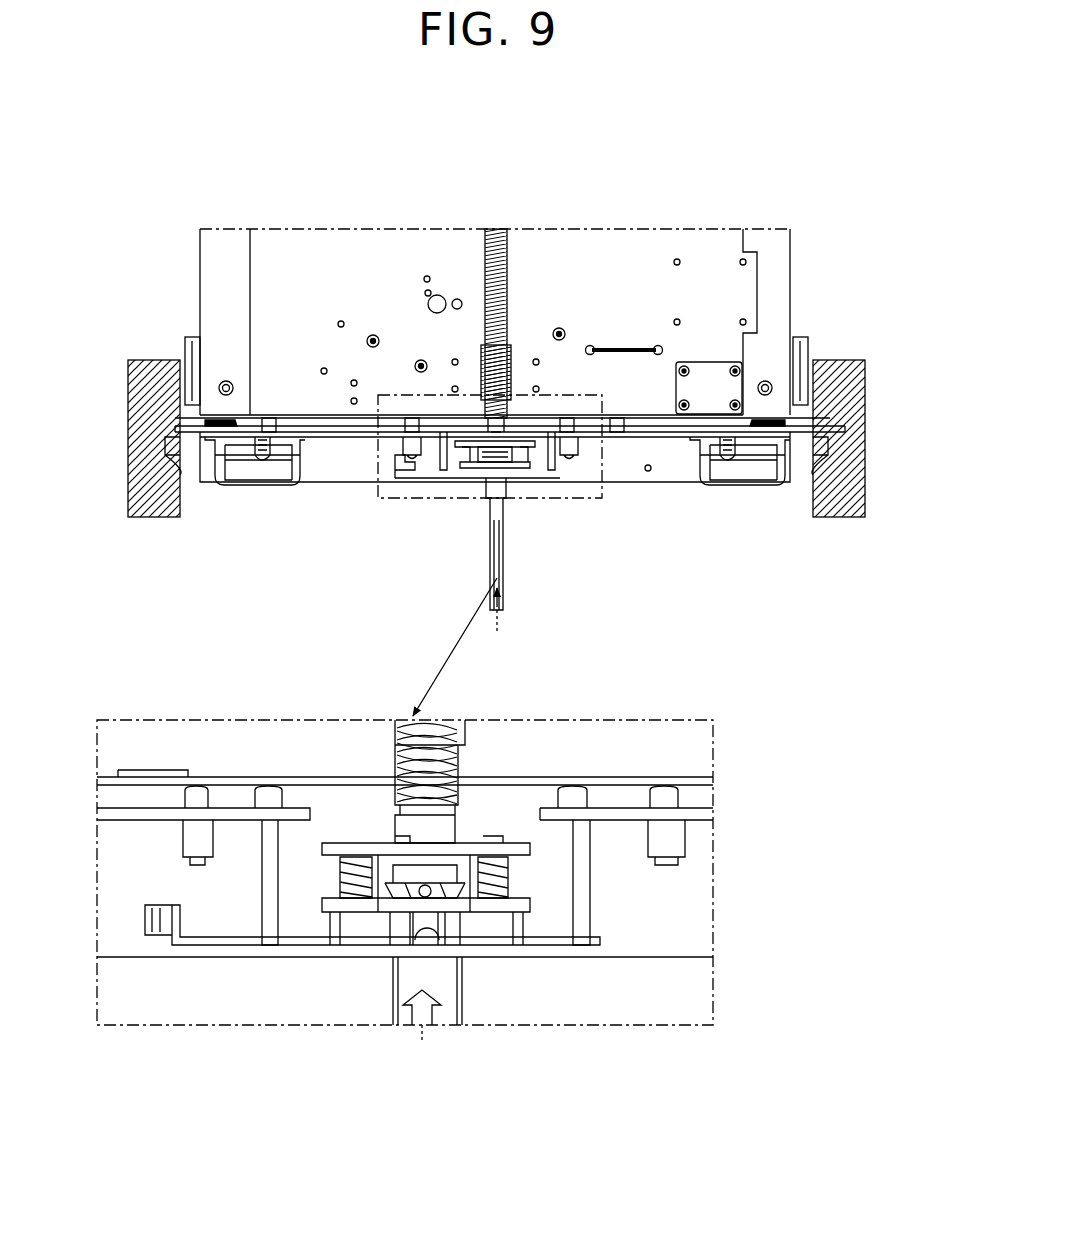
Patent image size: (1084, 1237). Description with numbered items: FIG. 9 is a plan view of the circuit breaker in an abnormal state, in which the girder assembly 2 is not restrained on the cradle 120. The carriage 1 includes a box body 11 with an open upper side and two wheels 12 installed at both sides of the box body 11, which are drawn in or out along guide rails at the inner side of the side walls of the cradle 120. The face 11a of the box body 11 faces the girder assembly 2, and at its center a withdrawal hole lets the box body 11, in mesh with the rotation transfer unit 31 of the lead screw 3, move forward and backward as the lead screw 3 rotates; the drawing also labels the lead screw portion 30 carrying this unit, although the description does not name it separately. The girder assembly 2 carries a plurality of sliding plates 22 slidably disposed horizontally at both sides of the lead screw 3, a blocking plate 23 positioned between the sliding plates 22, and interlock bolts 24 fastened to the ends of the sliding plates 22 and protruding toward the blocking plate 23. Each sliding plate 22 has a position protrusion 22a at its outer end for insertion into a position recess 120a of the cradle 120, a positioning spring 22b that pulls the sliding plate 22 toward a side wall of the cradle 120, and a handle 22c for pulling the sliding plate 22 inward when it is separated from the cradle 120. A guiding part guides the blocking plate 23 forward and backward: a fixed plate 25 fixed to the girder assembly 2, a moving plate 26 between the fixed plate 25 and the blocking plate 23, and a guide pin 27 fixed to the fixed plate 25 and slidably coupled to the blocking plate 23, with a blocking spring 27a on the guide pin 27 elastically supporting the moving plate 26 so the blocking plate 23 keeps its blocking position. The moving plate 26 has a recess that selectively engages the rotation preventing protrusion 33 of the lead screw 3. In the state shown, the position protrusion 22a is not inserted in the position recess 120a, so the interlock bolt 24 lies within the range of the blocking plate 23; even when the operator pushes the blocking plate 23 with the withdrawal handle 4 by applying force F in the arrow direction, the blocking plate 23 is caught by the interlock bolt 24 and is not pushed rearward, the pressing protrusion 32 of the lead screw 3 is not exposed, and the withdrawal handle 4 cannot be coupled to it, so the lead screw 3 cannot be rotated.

The carriage 1 is at (197, 252).
The girder assembly 2 is at (320, 486).
The lead screw 3 is at (497, 229).
The withdrawal handle 4 is at (512, 580).
The box body 11 is at (206, 287).
The face facing the girder assembly 11a is at (672, 418).
The wheels 12 is at (190, 352).
The sliding plate 22 is at (350, 437).
The position protrusion 22a is at (175, 428).
The positioning spring 22b is at (180, 418).
The handle 22c is at (255, 480).
The blocking plate 23 is at (400, 480).
The interlock bolt 24 is at (443, 470).
The fixed plate 25 is at (458, 447).
The moving plate 26 is at (488, 462).
The guide pin 27 is at (472, 468).
The blocking spring 27a is at (527, 450).
The spring housing 30 is at (468, 742).
The rotation transfer unit 31 is at (440, 727).
The pressing protrusion 32 is at (432, 925).
The rotation preventing protrusion 33 is at (508, 468).
The cradle 120 is at (138, 493).
The position recess 120a is at (172, 457).